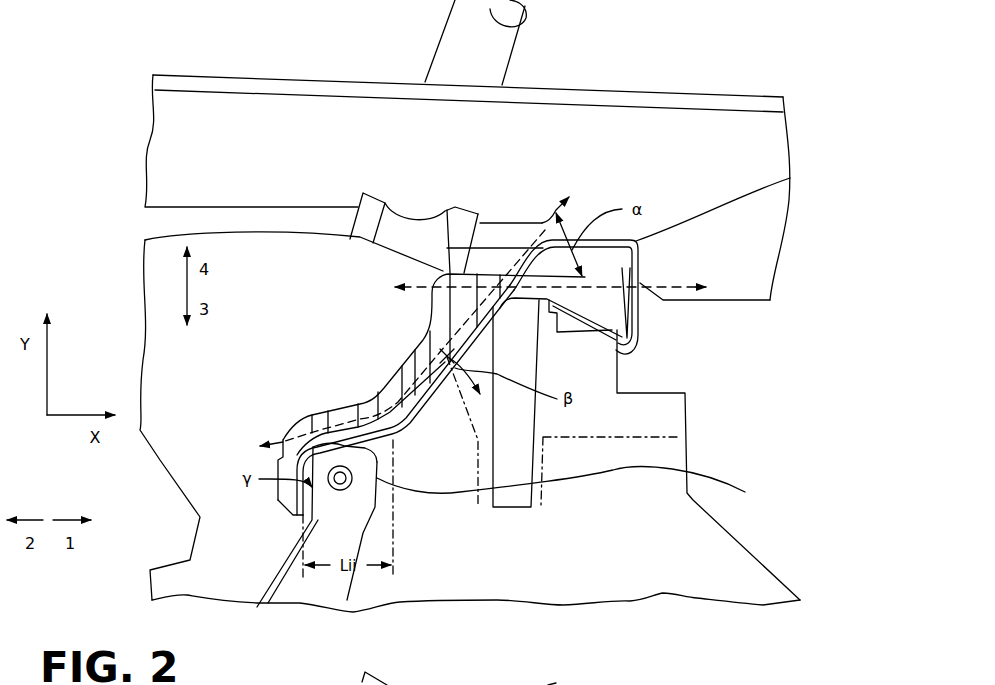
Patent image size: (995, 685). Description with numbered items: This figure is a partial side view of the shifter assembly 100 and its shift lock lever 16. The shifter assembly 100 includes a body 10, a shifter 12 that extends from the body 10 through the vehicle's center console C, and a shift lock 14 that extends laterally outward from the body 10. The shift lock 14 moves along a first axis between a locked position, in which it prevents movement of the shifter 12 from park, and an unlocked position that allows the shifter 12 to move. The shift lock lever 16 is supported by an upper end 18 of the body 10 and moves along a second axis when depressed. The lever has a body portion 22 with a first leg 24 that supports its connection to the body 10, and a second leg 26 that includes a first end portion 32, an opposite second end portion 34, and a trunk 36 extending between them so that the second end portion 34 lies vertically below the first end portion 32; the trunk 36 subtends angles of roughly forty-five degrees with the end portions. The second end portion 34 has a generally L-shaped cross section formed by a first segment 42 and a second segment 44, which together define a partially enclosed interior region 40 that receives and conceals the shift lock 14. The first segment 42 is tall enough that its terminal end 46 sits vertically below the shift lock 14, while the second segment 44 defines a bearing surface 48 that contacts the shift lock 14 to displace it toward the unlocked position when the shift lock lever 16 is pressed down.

The shifter assembly 100 is at (673, 64).
The center console C is at (737, 88).
The shifter 12 is at (490, 45).
The first (front) end portion 32 is at (627, 260).
The body 10 is at (641, 541).
The shift lock lever 16 is at (305, 300).
The trunk 36 is at (391, 354).
The second segment 44 is at (333, 405).
The upper end 18 is at (641, 308).
The second leg 26 is at (506, 332).
The second (rear) end portion 34 is at (262, 500).
The first segment 42 is at (278, 508).
The bearing surface 48 is at (347, 451).
The shift lock 14 is at (351, 482).
The terminal end 46 is at (263, 602).
The interior region 40 is at (572, 487).
The body portion 22 is at (349, 684).
The first leg 24 is at (557, 684).